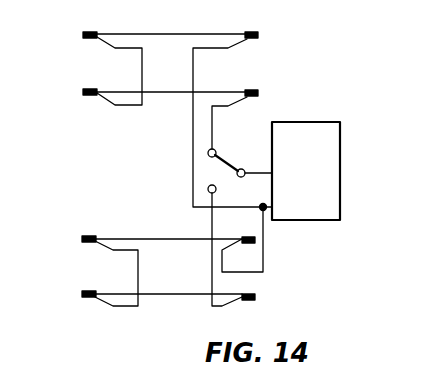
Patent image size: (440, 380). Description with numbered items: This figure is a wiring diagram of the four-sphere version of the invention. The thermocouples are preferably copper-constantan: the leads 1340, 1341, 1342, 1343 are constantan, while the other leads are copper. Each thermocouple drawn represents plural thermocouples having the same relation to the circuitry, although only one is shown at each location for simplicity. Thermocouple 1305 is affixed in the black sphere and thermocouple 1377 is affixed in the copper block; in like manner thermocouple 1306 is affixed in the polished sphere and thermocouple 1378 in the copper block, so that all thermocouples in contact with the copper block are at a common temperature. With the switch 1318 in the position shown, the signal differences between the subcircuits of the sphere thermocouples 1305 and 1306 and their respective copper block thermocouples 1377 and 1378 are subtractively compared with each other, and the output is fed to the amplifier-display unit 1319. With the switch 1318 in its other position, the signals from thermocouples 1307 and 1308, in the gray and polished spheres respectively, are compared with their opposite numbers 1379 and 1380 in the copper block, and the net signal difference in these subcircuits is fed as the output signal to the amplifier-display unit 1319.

The thermocouple 1305 is at (83, 34).
The thermocouple 1306 is at (83, 92).
The thermocouple 1307 is at (82, 238).
The thermocouple 1308 is at (82, 294).
The lead 1340 is at (133, 33).
The lead 1341 is at (163, 93).
The lead 1342 is at (140, 238).
The lead 1343 is at (177, 295).
The thermocouple 1377 is at (258, 35).
The thermocouple 1378 is at (258, 93).
The thermocouple 1379 is at (255, 240).
The thermocouple 1380 is at (255, 297).
The switch 1318 is at (228, 163).
The amplifier-display unit 1319 is at (306, 171).